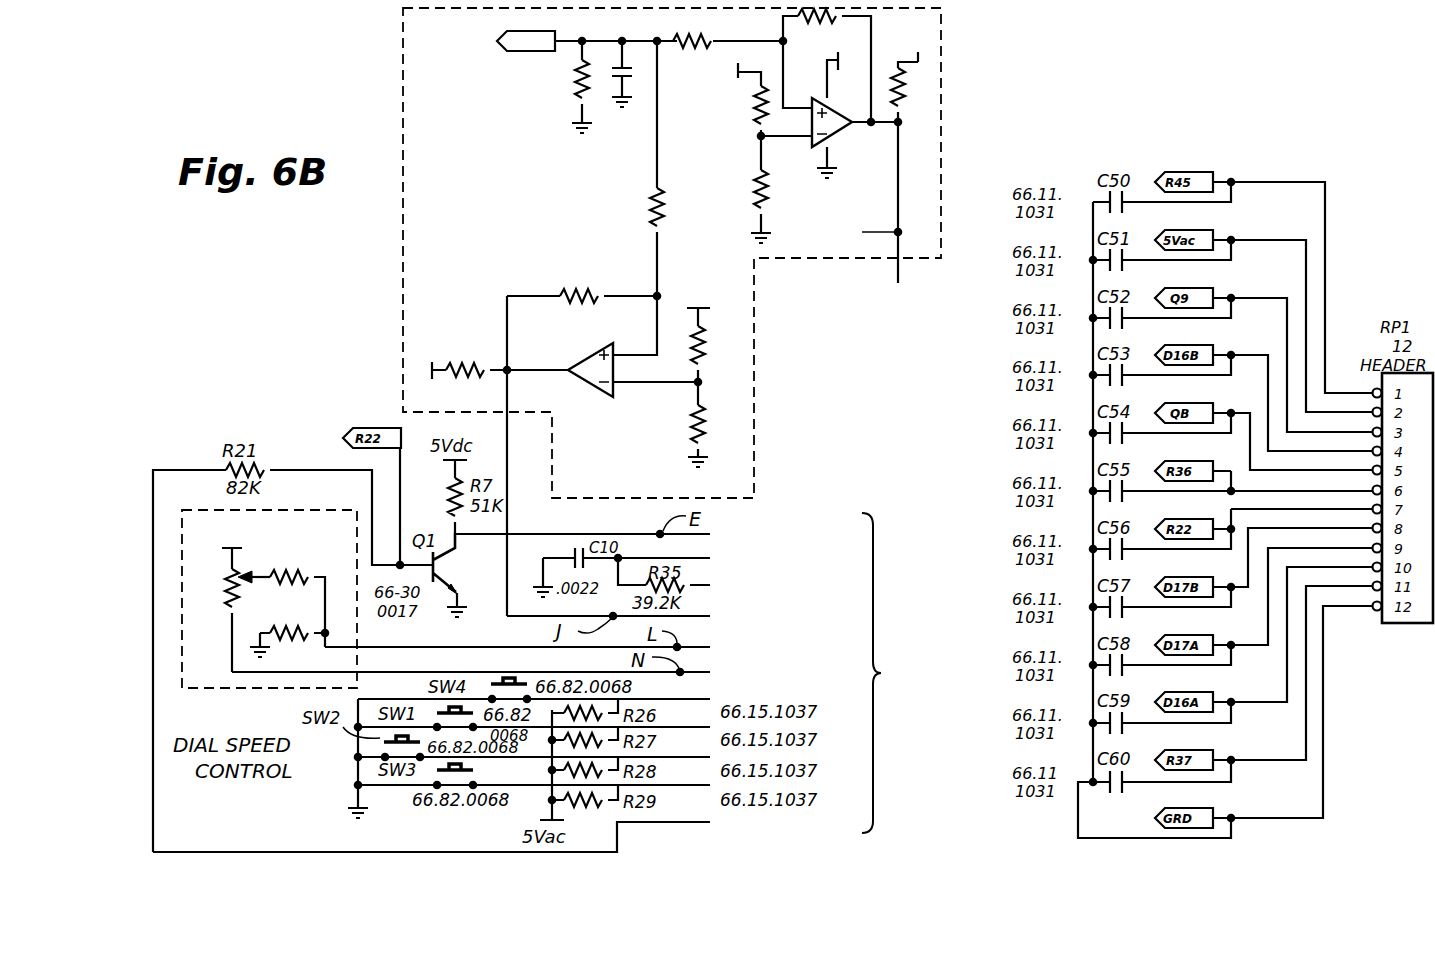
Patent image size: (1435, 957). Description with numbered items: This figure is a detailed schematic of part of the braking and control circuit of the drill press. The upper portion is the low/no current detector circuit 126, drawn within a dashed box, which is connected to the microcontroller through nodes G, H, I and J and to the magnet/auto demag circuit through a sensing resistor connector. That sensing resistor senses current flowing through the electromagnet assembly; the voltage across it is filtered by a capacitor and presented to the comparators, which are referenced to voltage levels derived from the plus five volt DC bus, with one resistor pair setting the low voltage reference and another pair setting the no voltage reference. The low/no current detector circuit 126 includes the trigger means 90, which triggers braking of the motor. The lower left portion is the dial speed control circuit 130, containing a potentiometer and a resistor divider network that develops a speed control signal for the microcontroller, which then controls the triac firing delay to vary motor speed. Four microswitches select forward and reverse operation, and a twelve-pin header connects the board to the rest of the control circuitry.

The low/no current detector circuit 126 is at (403, 265).
The dial speed control circuit 130 is at (288, 516).
The trigger means 90 is at (942, 237).